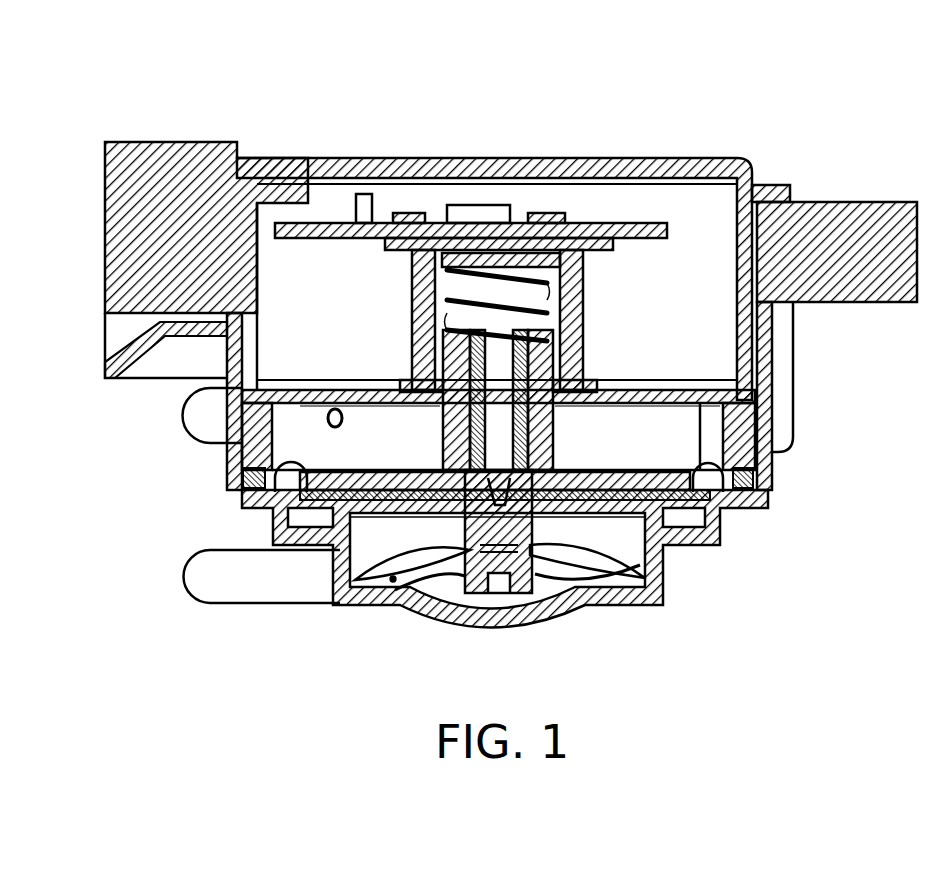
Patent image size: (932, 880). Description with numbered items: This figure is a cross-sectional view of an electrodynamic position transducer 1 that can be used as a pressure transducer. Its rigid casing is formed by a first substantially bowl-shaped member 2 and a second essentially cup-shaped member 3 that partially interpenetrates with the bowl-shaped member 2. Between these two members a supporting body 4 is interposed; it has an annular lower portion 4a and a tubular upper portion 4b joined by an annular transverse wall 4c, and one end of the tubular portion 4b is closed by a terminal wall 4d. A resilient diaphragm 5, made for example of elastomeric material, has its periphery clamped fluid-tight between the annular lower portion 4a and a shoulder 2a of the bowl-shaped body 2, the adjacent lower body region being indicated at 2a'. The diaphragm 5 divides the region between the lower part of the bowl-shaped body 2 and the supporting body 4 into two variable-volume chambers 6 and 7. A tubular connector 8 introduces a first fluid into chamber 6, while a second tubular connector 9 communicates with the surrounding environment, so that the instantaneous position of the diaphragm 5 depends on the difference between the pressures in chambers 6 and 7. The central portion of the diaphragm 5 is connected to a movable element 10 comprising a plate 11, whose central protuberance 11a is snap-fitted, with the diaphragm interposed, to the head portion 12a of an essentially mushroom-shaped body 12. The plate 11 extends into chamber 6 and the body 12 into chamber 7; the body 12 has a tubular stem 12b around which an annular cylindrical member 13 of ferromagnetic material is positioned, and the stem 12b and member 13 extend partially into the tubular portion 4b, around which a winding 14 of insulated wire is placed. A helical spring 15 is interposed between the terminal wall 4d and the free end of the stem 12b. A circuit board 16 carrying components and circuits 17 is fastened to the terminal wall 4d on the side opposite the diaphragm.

The electrodynamic position transducer 1 is at (745, 150).
The bowl-shaped member 2 is at (774, 350).
The shoulder 2a is at (492, 552).
The lower body flange 2a' is at (535, 559).
The cup-shaped member 3 is at (330, 152).
The supporting body 4 is at (575, 455).
The annular lower portion 4a is at (722, 430).
The tubular upper portion 4b is at (578, 280).
The annular transverse wall 4c is at (687, 392).
The terminal wall 4d is at (490, 222).
The resilient diaphragm 5 is at (345, 468).
The chamber 6 is at (375, 575).
The chamber 7 is at (393, 450).
The tubular connector 8 is at (233, 595).
The second tubular connector 9 is at (195, 417).
The movable element 10 is at (637, 405).
The plate 11 is at (578, 540).
The central protuberance 11a is at (473, 615).
The mushroom-shaped body 12 is at (395, 385).
The head portion 12a is at (340, 470).
The tubular stem 12b is at (498, 462).
The annular cylindrical member 13 is at (433, 458).
The winding 14 is at (418, 292).
The helical spring 15 is at (548, 270).
The circuit board 16 is at (698, 160).
The components and circuits 17 is at (580, 210).